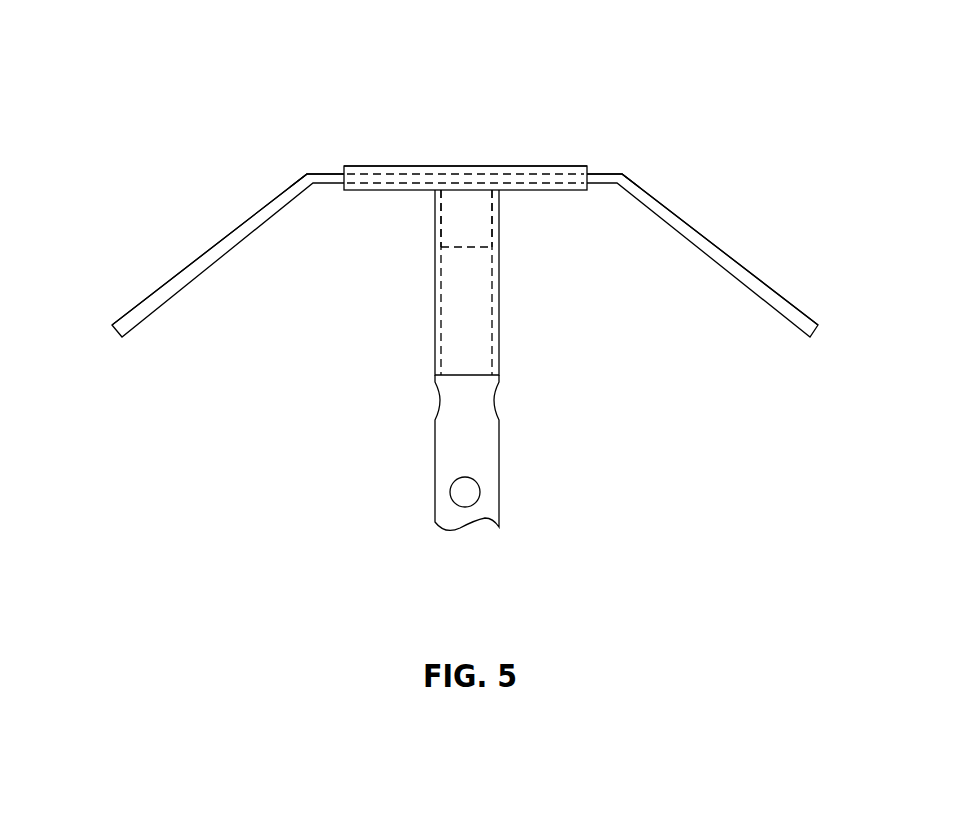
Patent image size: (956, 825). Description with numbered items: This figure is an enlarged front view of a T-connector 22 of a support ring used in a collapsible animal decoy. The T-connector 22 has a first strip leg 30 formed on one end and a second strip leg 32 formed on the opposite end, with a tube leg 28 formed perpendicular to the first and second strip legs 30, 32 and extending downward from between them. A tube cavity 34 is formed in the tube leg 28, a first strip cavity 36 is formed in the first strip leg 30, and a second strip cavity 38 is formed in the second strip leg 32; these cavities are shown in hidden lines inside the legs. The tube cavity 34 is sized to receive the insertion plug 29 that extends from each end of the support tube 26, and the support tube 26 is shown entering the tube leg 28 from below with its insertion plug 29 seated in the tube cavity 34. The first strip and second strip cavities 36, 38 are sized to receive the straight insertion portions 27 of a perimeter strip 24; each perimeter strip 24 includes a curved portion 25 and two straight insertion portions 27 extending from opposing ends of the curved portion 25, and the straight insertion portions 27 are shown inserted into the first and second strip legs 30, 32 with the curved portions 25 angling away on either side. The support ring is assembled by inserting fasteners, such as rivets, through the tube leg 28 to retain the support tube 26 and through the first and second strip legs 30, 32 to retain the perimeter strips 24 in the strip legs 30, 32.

The T-connector 22 is at (465, 145).
The perimeter strip 24 is at (155, 272).
The curved portion 25 is at (245, 222).
The support tube 26 is at (499, 455).
The straight insertion portion 27 is at (325, 170).
The tube leg 28 is at (499, 272).
The insertion plug 29 is at (460, 307).
The first strip leg 30 is at (390, 166).
The second strip leg 32 is at (527, 166).
The tube cavity 34 is at (492, 343).
The first strip cavity 36 is at (380, 190).
The second strip cavity 38 is at (550, 190).